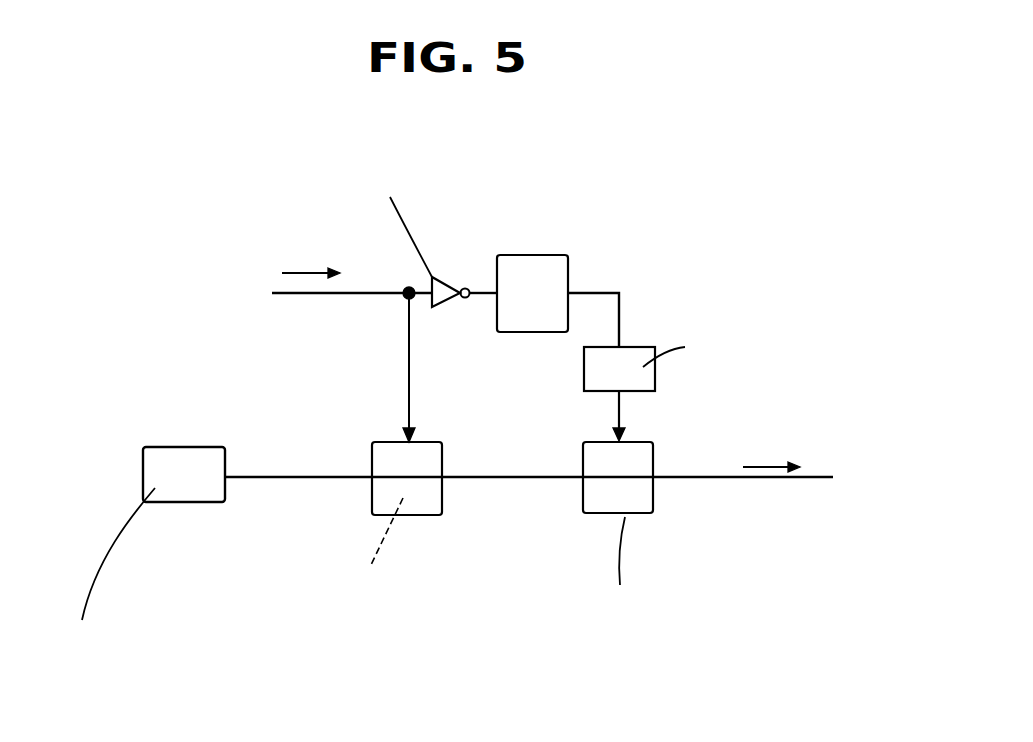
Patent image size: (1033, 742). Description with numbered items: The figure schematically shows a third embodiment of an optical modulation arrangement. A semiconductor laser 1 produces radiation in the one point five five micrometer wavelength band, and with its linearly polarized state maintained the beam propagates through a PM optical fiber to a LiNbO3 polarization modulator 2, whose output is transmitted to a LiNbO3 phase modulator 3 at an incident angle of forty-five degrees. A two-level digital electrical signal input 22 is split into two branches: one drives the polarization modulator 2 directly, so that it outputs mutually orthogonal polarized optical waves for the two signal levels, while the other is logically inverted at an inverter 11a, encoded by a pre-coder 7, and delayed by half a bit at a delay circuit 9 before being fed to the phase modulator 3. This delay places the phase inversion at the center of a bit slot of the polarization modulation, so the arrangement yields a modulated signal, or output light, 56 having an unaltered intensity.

The semiconductor laser 1 is at (183, 483).
The polarization modulator 2 is at (372, 507).
The phase modulator 3 is at (607, 498).
The pre-coder 7 is at (518, 268).
The delay circuit 9 is at (635, 355).
The inverter 11a is at (438, 283).
The digital electrical signal input 22 is at (311, 260).
The modulated signal (output light) 56 is at (760, 449).